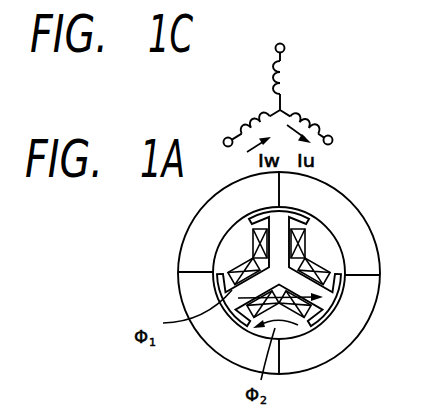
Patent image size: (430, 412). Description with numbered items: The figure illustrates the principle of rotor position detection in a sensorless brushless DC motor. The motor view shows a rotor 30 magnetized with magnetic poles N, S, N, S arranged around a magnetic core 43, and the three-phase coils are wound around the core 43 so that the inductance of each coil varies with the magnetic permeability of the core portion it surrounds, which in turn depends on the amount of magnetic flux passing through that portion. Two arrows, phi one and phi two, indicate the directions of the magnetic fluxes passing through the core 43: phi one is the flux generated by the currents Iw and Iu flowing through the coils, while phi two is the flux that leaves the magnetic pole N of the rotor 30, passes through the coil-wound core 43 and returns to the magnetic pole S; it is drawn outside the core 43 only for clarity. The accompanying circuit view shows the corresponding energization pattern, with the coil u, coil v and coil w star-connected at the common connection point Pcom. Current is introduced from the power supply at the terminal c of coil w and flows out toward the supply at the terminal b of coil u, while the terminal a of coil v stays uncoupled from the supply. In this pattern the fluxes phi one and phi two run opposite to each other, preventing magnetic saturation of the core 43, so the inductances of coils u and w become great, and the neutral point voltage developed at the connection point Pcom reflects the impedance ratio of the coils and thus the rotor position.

In FIG. 1A, the rotor 30 is at (365, 257).
In FIG. 1A, the magnetic core 43 is at (296, 210).
In FIG. 1C, the terminal of coil V a is at (279, 42).
In FIG. 1C, the terminal of coil U b is at (334, 144).
In FIG. 1C, the terminal of coil W c is at (227, 144).
In FIG. 1C, the coil U u is at (308, 116).
In FIG. 1C, the coil V v is at (290, 81).
In FIG. 1C, the coil W w is at (260, 110).
In FIG. 1C, the connection point Pcom is at (285, 106).